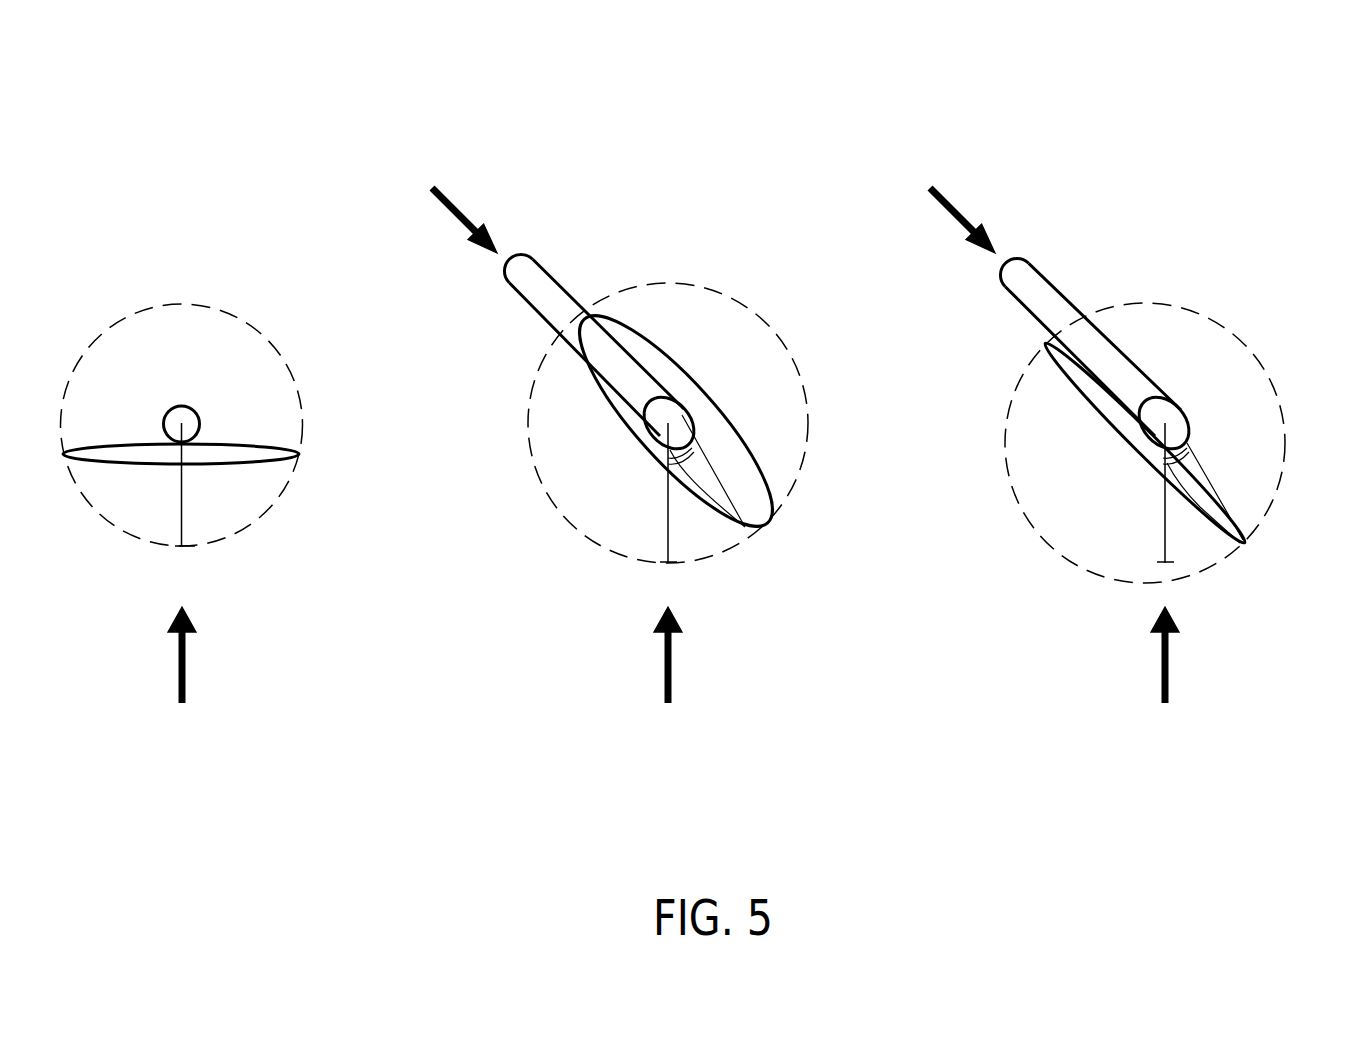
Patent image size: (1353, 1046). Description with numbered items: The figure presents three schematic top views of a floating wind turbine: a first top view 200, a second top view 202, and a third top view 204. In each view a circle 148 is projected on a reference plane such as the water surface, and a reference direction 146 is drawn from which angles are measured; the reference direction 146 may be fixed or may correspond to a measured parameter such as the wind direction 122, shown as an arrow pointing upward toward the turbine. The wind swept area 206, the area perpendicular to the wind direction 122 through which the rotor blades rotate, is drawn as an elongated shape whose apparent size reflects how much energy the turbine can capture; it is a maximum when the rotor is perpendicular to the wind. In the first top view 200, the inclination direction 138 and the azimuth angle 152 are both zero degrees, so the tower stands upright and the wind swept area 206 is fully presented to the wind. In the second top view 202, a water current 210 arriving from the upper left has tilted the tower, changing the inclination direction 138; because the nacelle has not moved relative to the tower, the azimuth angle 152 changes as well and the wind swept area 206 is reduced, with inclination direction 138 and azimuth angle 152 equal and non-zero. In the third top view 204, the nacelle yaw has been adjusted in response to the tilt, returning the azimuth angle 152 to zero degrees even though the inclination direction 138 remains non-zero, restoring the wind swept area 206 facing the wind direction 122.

The first top view 200 is at (252, 142).
The second top view 202 is at (738, 142).
The third top view 204 is at (1233, 142).
The circle 148 is at (163, 302).
The wind swept area 206 is at (257, 466).
The azimuth angle 152 is at (684, 411).
The reference direction 146 is at (180, 530).
The inclination direction 138 is at (745, 527).
The water current 210 is at (463, 209).
The wind direction 122 is at (185, 667).